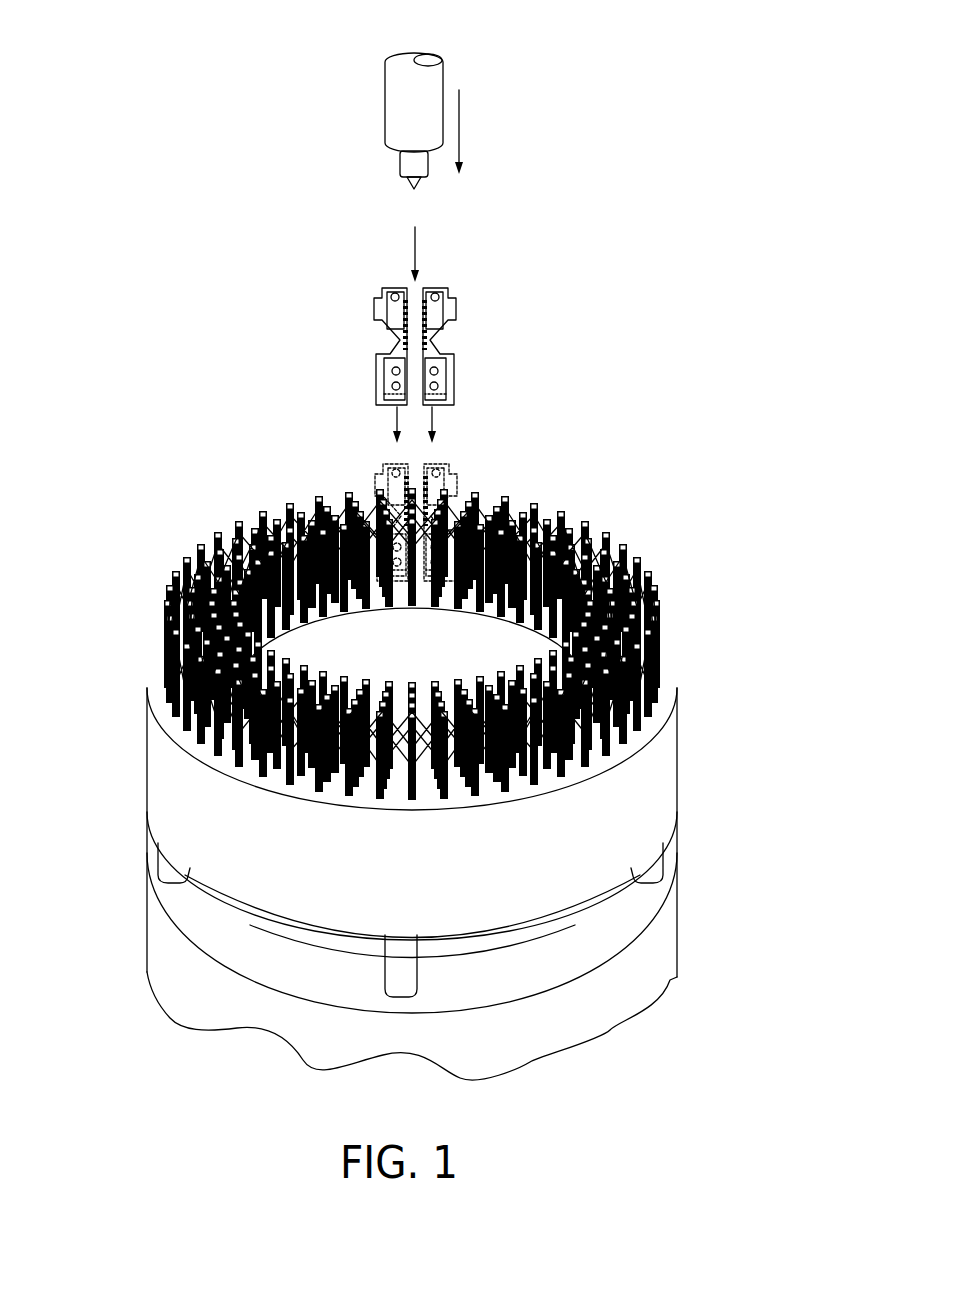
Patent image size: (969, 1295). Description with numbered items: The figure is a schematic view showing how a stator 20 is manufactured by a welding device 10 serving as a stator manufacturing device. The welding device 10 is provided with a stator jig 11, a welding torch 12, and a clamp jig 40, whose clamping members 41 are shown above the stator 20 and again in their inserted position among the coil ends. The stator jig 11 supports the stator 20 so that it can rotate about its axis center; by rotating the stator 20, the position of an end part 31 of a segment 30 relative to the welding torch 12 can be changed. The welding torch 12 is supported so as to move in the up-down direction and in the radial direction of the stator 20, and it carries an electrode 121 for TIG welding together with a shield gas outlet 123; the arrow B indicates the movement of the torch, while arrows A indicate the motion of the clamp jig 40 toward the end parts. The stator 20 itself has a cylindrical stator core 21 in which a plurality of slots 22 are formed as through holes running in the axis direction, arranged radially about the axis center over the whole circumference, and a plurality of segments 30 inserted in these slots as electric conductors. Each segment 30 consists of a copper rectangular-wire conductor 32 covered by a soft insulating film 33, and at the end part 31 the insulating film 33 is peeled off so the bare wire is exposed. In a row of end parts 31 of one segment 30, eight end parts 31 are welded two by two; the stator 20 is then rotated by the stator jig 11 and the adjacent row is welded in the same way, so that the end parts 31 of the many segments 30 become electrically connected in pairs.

The welding device 10 is at (264, 70).
The welding torch 12 is at (385, 104).
The electrode 121 is at (416, 184).
The shield gas outlet 123 is at (404, 178).
The clamp jig 40 is at (463, 287).
The clamp jaws 41 is at (396, 327).
The stator 20 is at (674, 640).
The stator core 21 is at (676, 776).
The slots 22 is at (436, 590).
The segment 30 is at (624, 555).
The end part 31 is at (538, 528).
The conductor 32 is at (446, 768).
The insulating film 33 is at (378, 770).
The stator jig 11 is at (146, 914).
The clamping direction A is at (434, 412).
The nozzle moving direction B is at (460, 118).